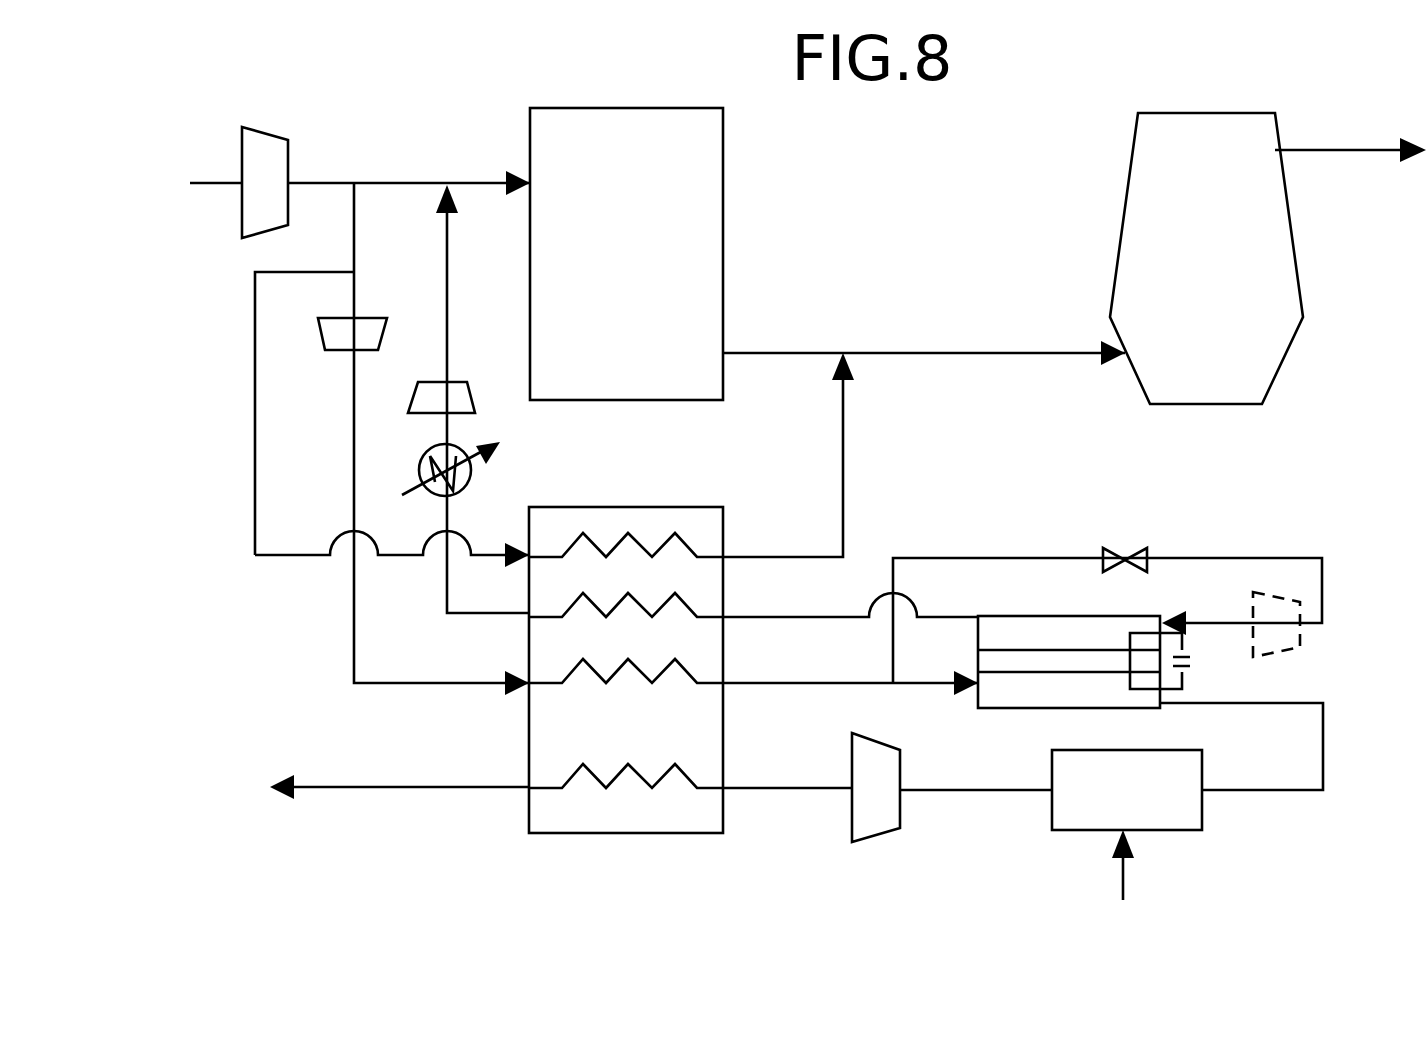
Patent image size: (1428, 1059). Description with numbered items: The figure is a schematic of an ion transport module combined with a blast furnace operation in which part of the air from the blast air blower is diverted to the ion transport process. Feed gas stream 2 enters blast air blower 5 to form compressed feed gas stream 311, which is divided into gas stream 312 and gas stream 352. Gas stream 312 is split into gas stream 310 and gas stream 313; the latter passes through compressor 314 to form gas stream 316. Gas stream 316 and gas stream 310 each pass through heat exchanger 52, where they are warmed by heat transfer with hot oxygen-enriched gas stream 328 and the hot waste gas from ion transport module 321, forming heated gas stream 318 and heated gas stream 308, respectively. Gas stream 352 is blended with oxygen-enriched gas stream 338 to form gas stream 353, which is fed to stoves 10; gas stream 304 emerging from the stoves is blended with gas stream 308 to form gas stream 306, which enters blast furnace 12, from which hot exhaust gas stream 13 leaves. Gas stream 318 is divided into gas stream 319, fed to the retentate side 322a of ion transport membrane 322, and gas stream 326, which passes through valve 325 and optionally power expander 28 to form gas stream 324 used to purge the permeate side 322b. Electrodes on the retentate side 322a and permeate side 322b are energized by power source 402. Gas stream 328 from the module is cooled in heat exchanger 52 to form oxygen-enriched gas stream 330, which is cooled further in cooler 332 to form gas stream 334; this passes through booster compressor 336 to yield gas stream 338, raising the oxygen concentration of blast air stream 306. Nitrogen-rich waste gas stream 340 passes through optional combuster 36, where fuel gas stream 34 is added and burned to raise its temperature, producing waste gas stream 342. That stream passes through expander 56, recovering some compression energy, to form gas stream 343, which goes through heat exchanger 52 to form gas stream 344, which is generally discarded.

The feed gas stream 2 is at (213, 180).
The blast air blower 5 is at (278, 138).
The stoves 10 is at (723, 187).
The blast furnace 12 is at (1128, 177).
The hot exhaust gas stream 13 is at (1362, 148).
The power expander 28 is at (1310, 637).
The fuel gas stream 34 is at (1123, 878).
The combuster 36 is at (1080, 830).
The heat exchanger 52 is at (658, 833).
The expander 56 is at (883, 830).
The gas stream 304 is at (803, 352).
The gas stream 306 is at (1030, 353).
The heated gas stream 308 is at (843, 450).
The gas stream 310 is at (255, 425).
The compressed feed gas stream 311 is at (330, 180).
The gas stream 312 is at (354, 203).
The gas stream 313 is at (354, 285).
The compressor 314 is at (335, 350).
The gas stream 316 is at (354, 417).
The heated gas stream 318 is at (750, 685).
The gas stream 319 is at (944, 690).
The ion transport module 321 is at (1128, 707).
The ion transport membrane 322 is at (978, 648).
The retentate side 322a is at (1030, 672).
The permeate side 322b is at (1085, 650).
The gas stream 324 is at (1228, 620).
The valve 325 is at (1115, 553).
The gas stream 326 is at (1040, 558).
The oxygen-enriched gas stream 328 is at (750, 615).
The oxygen-enriched gas stream 330 is at (447, 578).
The cooler 332 is at (470, 495).
The gas stream 334 is at (443, 430).
The booster compressor 336 is at (475, 398).
The oxygen-enriched gas stream 338 is at (447, 302).
The nitrogen-rich waste gas stream 340 is at (1303, 795).
The waste gas stream 342 is at (978, 793).
The gas stream 343 is at (785, 793).
The gas stream 344 is at (407, 790).
The gas stream 352 is at (420, 180).
The gas stream 353 is at (485, 180).
The power source 402 is at (1183, 680).